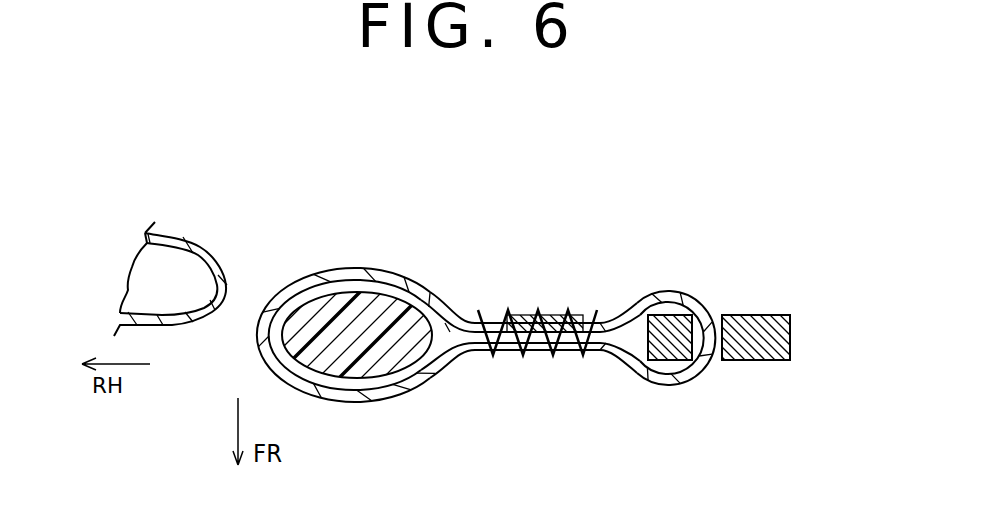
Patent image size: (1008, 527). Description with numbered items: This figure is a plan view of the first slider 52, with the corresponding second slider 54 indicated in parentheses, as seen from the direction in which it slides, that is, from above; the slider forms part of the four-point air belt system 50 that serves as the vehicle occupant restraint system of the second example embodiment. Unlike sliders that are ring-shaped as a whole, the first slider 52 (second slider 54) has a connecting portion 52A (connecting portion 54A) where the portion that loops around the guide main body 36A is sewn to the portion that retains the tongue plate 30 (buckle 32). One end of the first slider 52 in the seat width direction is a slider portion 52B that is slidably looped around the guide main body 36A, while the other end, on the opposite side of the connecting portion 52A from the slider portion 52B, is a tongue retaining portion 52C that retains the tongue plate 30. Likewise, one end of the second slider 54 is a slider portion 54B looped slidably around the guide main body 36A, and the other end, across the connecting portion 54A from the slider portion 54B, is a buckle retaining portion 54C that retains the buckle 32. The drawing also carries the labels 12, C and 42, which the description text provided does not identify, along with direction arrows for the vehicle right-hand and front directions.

The vehicle door 12 is at (211, 229).
The center line C is at (247, 303).
The guide main body 36A is at (398, 278).
The door inner panel 42 is at (717, 322).
The four-point air belt system 50 is at (788, 270).
The first slider 52 is at (563, 288).
The second slider 54 is at (543, 300).
The connecting portion 52A is at (550, 371).
The connecting portion 54A is at (537, 345).
The slider portion 52B is at (349, 390).
The slider portion 54B is at (325, 403).
The tongue retaining portion 52C is at (709, 393).
The buckle retaining portion 54C is at (637, 378).
The tongue plate 30 is at (778, 390).
The buckle 32 is at (775, 378).